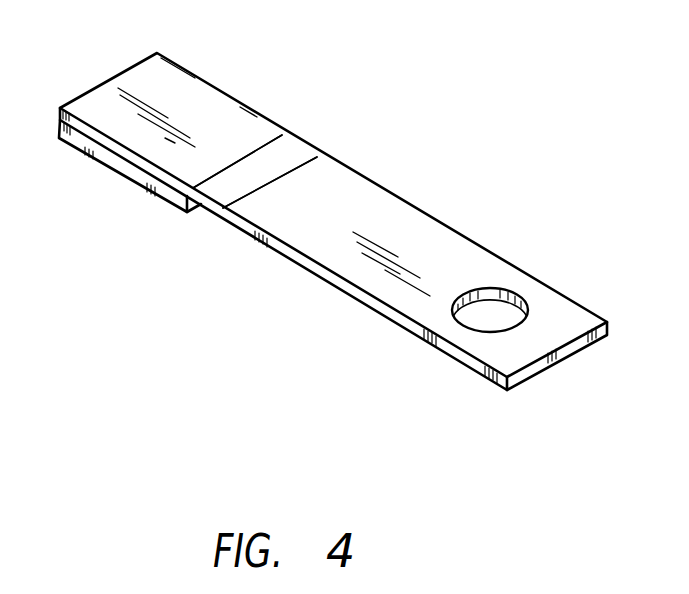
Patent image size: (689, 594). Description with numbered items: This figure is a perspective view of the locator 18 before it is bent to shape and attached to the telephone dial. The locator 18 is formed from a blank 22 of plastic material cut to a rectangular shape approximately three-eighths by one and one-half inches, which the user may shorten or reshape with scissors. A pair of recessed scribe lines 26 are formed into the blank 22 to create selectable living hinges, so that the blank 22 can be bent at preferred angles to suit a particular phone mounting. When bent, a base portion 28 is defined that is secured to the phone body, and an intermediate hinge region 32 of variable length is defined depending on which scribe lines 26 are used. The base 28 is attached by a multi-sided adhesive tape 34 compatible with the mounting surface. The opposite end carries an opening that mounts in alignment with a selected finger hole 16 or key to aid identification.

The blank 22 is at (132, 70).
The base portion 28 is at (183, 85).
The intermediate hinge region 32 is at (295, 153).
The recessed scribe lines 26 is at (250, 198).
The finger hole 16 is at (516, 293).
The locator 18 is at (626, 337).
The multi-sided adhesive tape 34 is at (103, 193).